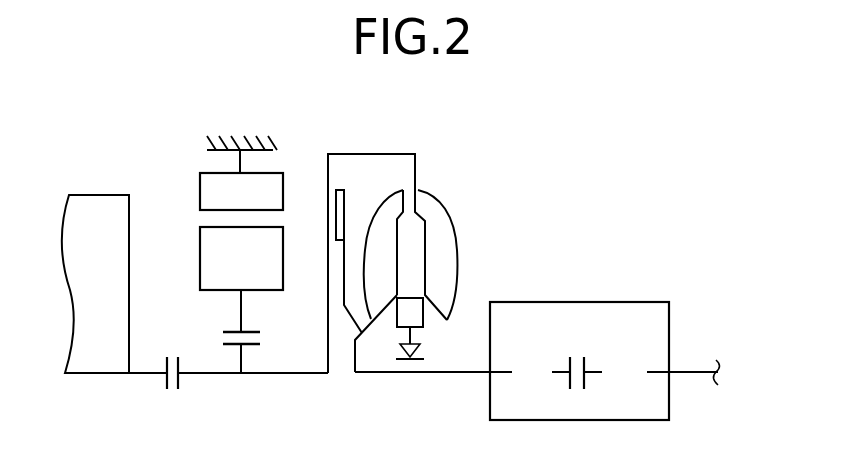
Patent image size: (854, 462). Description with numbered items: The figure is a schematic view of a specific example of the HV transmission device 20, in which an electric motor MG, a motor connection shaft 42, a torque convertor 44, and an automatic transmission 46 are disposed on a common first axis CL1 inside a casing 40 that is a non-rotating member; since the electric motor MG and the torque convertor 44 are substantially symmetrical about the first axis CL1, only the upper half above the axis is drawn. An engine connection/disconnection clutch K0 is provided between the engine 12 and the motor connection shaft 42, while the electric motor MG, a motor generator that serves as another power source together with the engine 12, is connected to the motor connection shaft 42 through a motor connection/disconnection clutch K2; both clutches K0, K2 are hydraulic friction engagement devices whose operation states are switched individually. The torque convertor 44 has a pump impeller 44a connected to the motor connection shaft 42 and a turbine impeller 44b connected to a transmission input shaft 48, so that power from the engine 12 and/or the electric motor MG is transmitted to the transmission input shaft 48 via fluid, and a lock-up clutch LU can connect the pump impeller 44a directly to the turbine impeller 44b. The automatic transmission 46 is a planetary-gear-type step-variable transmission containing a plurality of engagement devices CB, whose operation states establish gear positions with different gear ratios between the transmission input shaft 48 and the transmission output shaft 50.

The engine 12 is at (95, 362).
The HV transmission device 20 is at (660, 182).
The casing 40 is at (233, 144).
The motor connection shaft 42 is at (262, 375).
The torque convertor 44 is at (434, 153).
The pump impeller 44a is at (443, 228).
The turbine impeller 44b is at (383, 219).
The automatic transmission 46 is at (579, 346).
The transmission input shaft 48 is at (432, 374).
The transmission output shaft 50 is at (695, 375).
The engine connection/disconnection clutch K0 is at (172, 389).
The motor connection/disconnection clutch K2 is at (226, 331).
The electric motor MG is at (241, 258).
The lock-up clutch LU is at (335, 207).
The engagement devices CB is at (577, 386).
The first axis CL1 is at (741, 373).